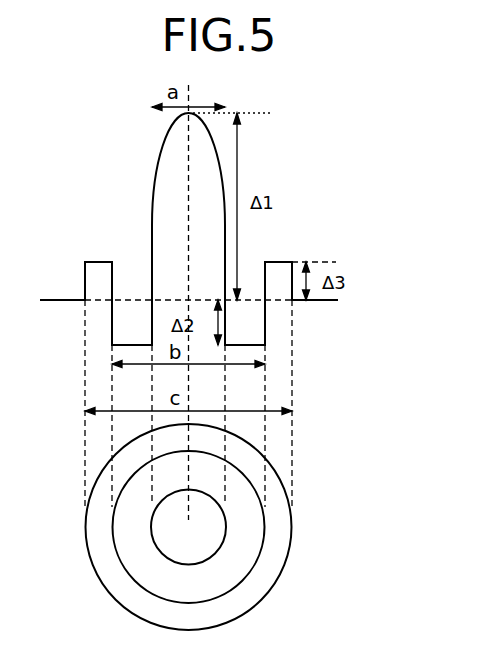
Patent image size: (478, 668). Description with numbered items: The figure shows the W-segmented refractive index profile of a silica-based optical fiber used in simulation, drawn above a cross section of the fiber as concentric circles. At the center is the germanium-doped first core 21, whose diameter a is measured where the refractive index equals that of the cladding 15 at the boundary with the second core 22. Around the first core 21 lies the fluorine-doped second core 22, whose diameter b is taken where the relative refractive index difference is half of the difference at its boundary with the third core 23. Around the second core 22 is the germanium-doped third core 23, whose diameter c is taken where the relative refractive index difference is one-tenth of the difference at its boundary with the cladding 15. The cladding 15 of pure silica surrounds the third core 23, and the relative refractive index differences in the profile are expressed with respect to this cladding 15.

The cladding 15 is at (209, 376).
The first core 21 is at (195, 547).
The second core 22 is at (240, 565).
The third core 23 is at (273, 548).